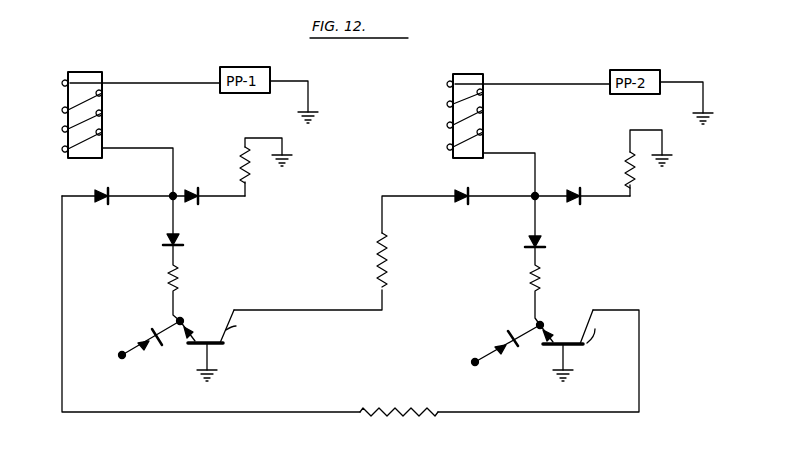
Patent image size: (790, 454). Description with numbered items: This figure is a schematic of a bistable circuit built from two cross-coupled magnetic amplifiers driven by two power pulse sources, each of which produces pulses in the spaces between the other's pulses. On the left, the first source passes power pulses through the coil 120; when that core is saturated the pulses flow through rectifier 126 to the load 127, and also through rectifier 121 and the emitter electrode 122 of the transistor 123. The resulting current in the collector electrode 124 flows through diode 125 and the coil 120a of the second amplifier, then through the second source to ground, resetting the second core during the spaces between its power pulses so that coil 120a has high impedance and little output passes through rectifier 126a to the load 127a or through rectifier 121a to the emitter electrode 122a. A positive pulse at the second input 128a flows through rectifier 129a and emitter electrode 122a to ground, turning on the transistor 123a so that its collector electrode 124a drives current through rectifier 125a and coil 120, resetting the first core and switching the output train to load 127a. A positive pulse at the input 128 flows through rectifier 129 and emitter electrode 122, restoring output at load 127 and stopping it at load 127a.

The coil 120 is at (103, 110).
The coil 120a is at (485, 112).
The rectifier 121 is at (184, 241).
The rectifier 121a is at (545, 244).
The emitter electrode 122 is at (183, 320).
The emitter electrode 122a is at (543, 324).
The transistor 123 is at (208, 350).
The transistor 123a is at (567, 350).
The collector electrode 124 is at (245, 325).
The collector electrode 124a is at (609, 331).
The diode 125 is at (466, 204).
The rectifier 125a is at (108, 192).
The rectifier 126 is at (199, 204).
The rectifier 126a is at (582, 186).
The load 127 is at (247, 174).
The load 127a is at (632, 178).
The input 128 is at (122, 358).
The second input 128a is at (474, 366).
The rectifier 129 is at (146, 336).
The rectifier 129a is at (510, 334).